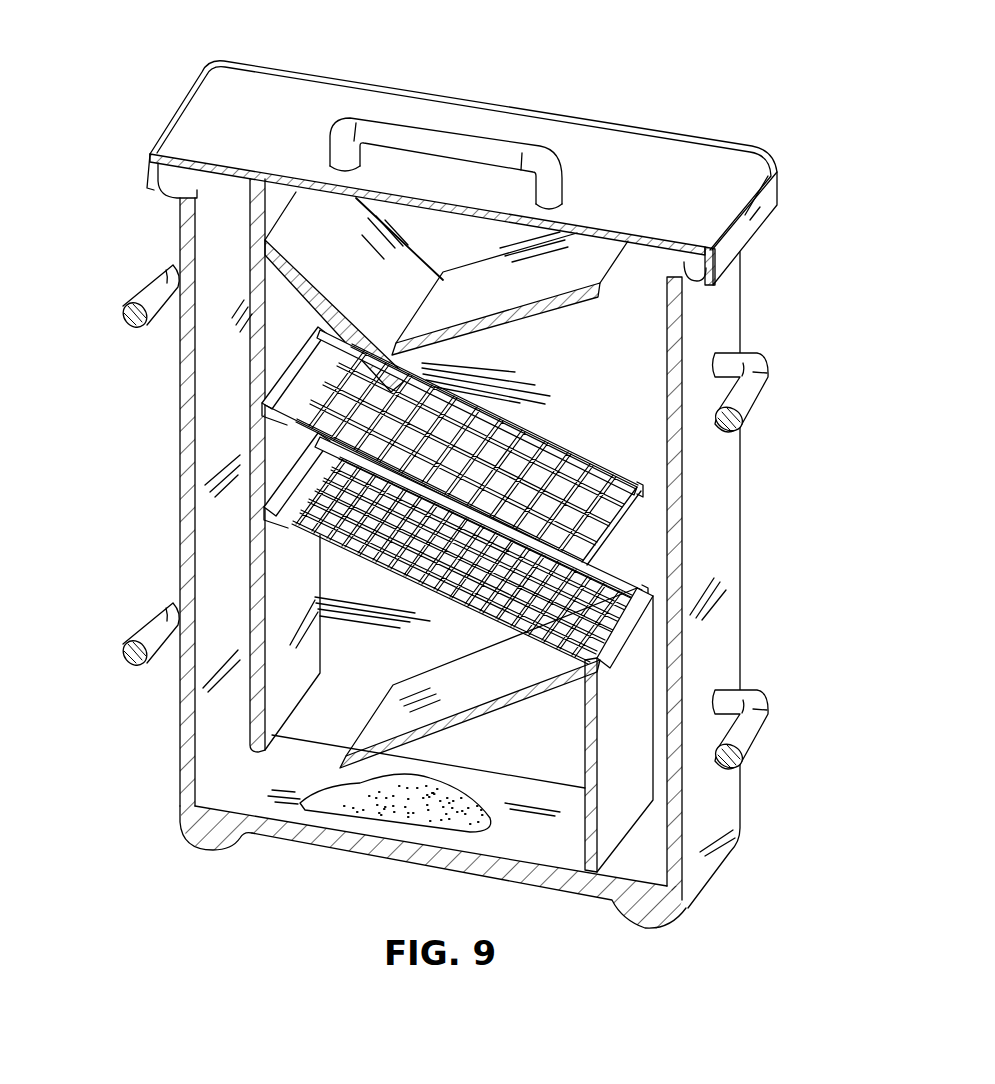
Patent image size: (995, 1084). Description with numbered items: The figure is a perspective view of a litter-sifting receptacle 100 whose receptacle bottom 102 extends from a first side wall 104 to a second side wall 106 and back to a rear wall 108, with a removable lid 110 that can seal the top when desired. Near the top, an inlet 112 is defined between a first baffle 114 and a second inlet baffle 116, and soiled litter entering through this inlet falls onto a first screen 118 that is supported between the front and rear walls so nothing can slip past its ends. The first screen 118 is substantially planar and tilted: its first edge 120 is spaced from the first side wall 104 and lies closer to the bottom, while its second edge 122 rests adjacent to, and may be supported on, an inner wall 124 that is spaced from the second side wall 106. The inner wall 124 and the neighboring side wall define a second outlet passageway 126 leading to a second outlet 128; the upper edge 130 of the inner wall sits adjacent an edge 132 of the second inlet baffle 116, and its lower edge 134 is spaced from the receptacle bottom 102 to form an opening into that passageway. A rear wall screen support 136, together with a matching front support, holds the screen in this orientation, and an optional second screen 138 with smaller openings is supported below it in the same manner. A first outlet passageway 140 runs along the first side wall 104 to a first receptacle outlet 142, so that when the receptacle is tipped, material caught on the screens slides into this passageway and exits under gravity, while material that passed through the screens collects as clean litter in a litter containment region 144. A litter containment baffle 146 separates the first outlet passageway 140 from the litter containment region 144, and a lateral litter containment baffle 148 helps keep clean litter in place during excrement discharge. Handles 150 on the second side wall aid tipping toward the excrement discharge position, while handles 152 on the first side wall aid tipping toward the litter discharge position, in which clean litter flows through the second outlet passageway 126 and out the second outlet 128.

The receptacle 100 is at (552, 74).
The receptacle bottom 102 is at (275, 838).
The first side wall 104 is at (728, 541).
The second side wall 106 is at (180, 405).
The rear wall 108 is at (597, 411).
The removable lid 110 is at (702, 155).
The inlet 112 is at (440, 240).
The first baffle 114 is at (500, 290).
The second inlet baffle 116 is at (300, 212).
The first screen 118 is at (592, 452).
The first edge 120 is at (607, 622).
The second edge 122 is at (293, 383).
The inner wall 124 is at (276, 546).
The second outlet passageway 126 is at (200, 758).
The second outlet 128 is at (190, 192).
The upper edge 130 is at (258, 222).
The edge 132 is at (272, 232).
The lower edge 134 is at (200, 800).
The rear wall screen support 136 is at (575, 470).
The second screen 138 is at (585, 578).
The first outlet passageway 140 is at (630, 855).
The first receptacle outlet 142 is at (640, 295).
The litter containment region 144 is at (470, 765).
The litter containment baffle 146 is at (624, 778).
The lateral litter containment baffle 148 is at (430, 688).
The handles 150 is at (143, 280).
The handles 152 is at (770, 400).